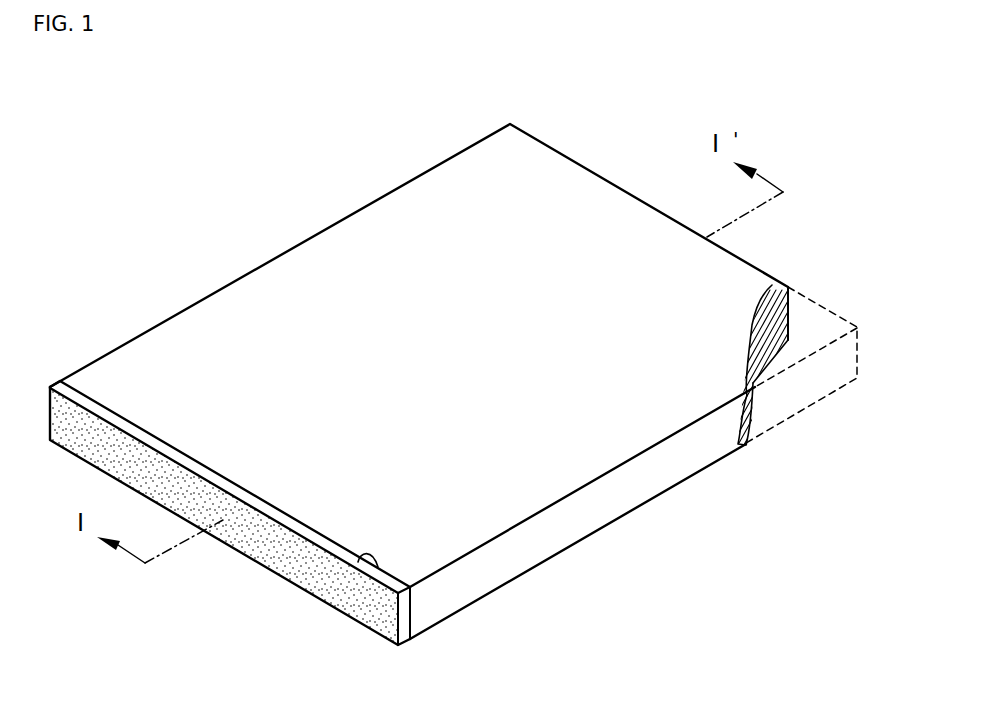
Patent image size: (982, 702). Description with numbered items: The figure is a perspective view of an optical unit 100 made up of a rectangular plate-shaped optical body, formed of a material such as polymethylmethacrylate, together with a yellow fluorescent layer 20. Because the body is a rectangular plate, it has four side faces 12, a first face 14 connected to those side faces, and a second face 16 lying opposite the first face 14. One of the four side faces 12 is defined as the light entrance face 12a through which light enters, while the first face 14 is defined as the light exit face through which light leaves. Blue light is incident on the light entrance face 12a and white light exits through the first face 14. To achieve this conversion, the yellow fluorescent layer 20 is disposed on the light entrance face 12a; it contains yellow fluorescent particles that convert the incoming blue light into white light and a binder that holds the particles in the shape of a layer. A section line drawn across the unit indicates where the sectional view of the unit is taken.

The optical unit 100 is at (240, 203).
The side faces 12 is at (590, 518).
The light entrance face 12a is at (358, 563).
The first face 14 is at (774, 284).
The second face 16 is at (753, 413).
The yellow fluorescent layer 20 is at (300, 563).